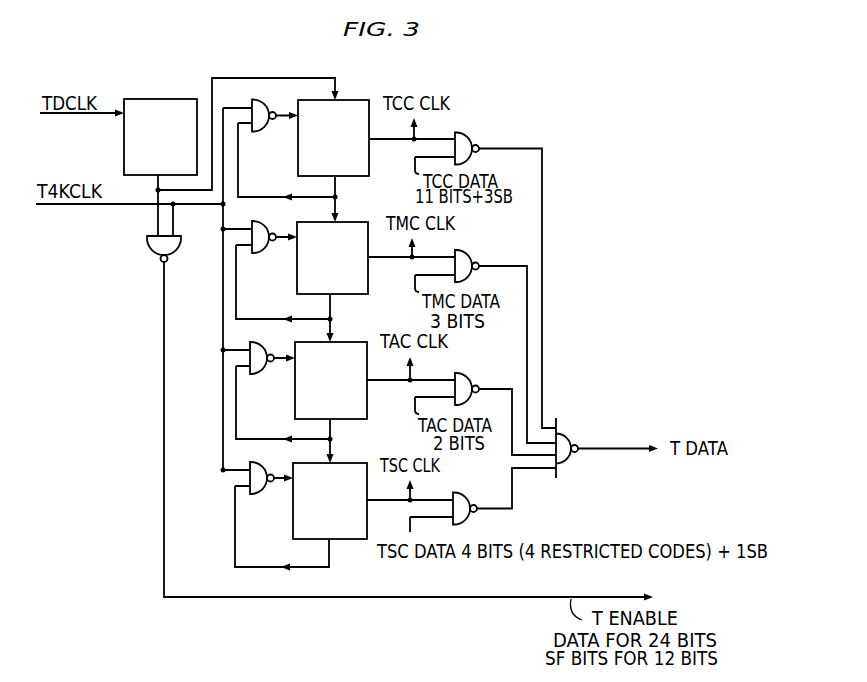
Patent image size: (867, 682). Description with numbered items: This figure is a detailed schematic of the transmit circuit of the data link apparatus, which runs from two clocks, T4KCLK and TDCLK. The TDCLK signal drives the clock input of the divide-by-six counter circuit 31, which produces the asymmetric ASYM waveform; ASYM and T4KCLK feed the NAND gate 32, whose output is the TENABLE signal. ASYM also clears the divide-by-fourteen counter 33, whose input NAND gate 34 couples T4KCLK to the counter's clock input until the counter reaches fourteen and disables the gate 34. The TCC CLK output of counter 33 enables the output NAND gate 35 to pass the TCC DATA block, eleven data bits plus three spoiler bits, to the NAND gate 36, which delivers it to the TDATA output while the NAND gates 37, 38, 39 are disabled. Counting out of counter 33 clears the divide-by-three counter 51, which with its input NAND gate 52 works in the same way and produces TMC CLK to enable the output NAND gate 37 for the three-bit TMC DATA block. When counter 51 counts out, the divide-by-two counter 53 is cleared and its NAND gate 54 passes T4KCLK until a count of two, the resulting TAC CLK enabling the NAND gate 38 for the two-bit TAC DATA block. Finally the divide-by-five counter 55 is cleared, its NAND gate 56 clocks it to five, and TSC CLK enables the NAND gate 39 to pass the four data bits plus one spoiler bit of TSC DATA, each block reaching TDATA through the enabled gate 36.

The divide-by-six counter circuit 31 is at (124, 150).
The NAND gate 32 is at (155, 251).
The divide-by-fourteen counter 33 is at (354, 100).
The NAND gate 34 is at (263, 132).
The output NAND gate 35 is at (469, 134).
The NAND gate 36 is at (570, 435).
The output NAND gate 37 is at (469, 252).
The NAND gate 38 is at (468, 372).
The NAND gate 39 is at (468, 492).
The divide-by-three counter 51 is at (353, 221).
The input NAND gate 52 is at (263, 253).
The divide-by-two counter 53 is at (351, 341).
The NAND gate 54 is at (261, 374).
The divide-by-five counter 55 is at (350, 462).
The NAND gate 56 is at (261, 494).